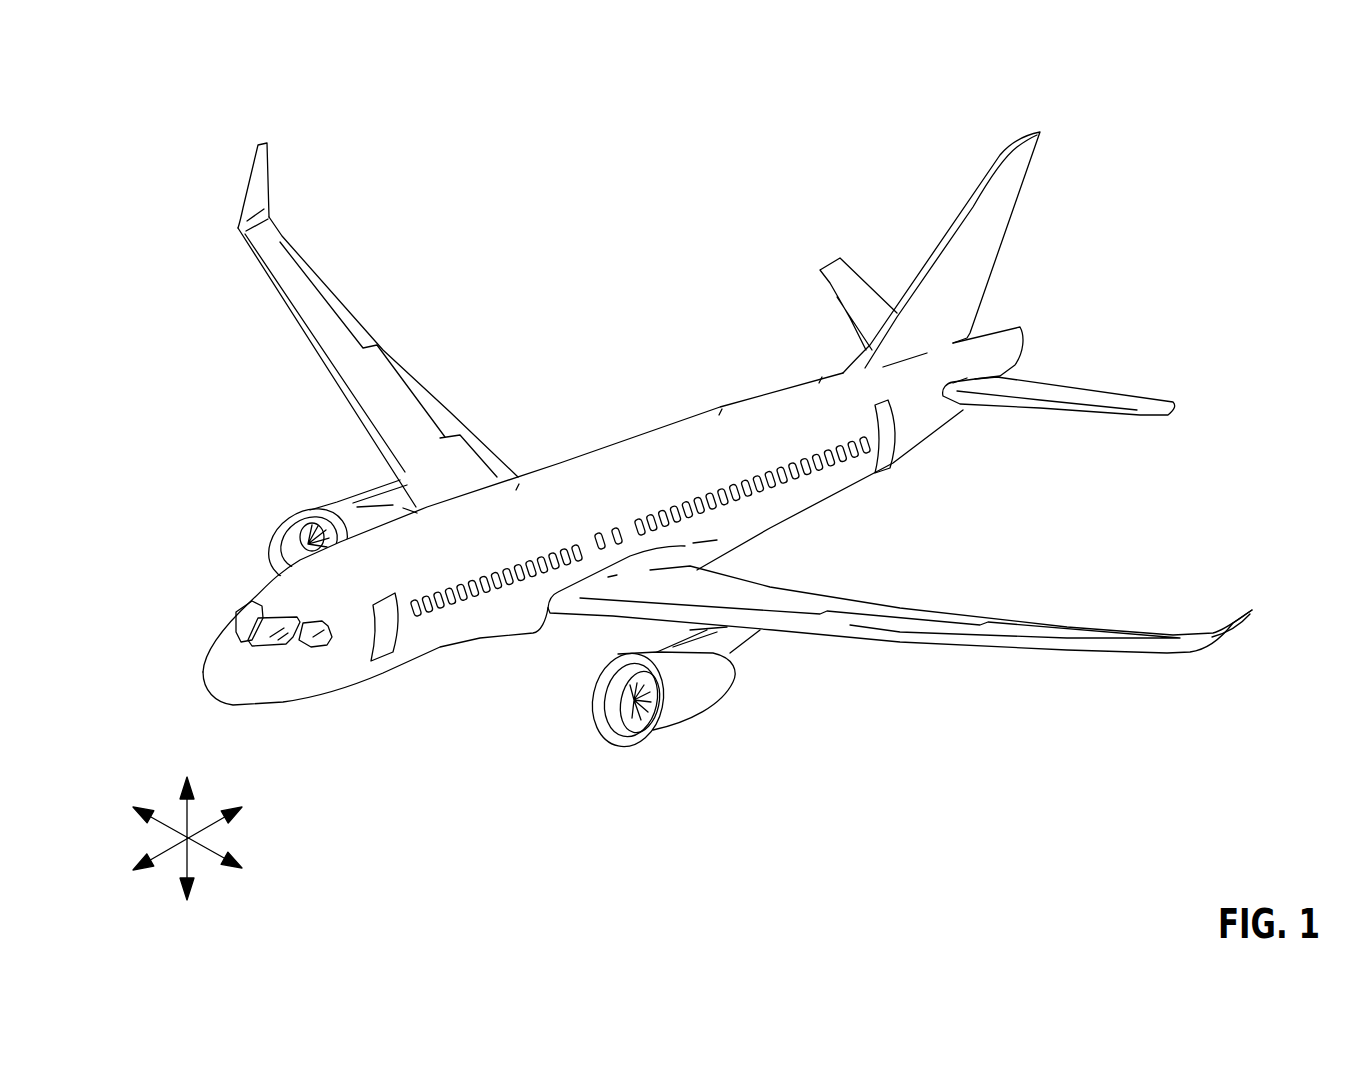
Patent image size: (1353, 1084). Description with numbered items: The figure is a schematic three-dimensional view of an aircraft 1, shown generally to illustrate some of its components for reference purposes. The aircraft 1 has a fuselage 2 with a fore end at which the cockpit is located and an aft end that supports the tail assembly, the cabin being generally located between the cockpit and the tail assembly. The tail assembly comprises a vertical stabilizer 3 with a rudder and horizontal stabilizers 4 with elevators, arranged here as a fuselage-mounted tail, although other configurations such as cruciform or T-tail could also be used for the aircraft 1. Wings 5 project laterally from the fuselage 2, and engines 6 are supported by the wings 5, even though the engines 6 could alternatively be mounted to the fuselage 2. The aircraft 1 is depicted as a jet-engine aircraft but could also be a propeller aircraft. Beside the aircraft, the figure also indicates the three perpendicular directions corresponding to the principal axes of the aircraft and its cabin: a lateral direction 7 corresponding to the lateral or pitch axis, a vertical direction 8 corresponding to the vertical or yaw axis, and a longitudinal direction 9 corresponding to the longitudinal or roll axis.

The aircraft 1 is at (250, 103).
The fuselage 2 is at (440, 642).
The vertical stabilizer 3 is at (992, 197).
The horizontal stabilizers 4 is at (857, 300).
The wings 5 is at (405, 422).
The engines 6 is at (332, 511).
The lateral direction 7 is at (203, 848).
The vertical direction 8 is at (185, 815).
The longitudinal direction 9 is at (165, 850).